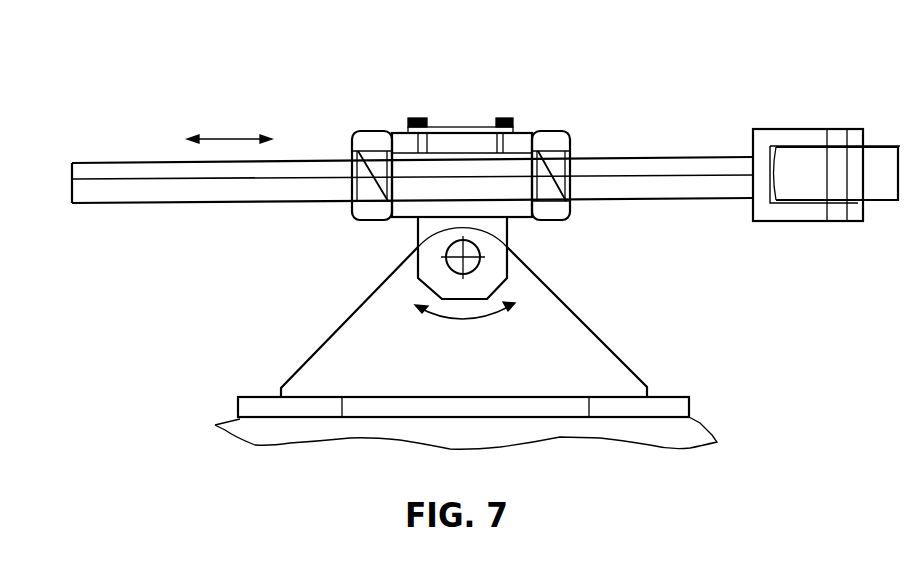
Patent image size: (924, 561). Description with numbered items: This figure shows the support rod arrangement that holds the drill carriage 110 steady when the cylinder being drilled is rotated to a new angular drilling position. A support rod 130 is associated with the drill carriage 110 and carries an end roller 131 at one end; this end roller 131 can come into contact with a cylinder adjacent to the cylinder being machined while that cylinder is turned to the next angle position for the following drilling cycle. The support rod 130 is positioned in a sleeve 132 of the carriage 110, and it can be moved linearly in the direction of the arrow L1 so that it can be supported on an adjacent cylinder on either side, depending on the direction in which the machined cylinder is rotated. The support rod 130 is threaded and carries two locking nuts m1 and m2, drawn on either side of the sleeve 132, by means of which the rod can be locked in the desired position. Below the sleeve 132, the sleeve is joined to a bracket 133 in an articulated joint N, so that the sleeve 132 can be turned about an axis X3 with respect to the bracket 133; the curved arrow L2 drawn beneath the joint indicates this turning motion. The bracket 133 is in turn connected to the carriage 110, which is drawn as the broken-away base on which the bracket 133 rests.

The drill carriage 110 is at (700, 409).
The support rod 130 is at (657, 158).
The end roller 131 is at (833, 160).
The sleeve 132 is at (460, 133).
The bracket 133 is at (490, 383).
The locking nut m1 is at (550, 138).
The locking nut m2 is at (375, 137).
The axis X3 is at (455, 270).
The articulated joint N is at (470, 255).
The arrow (linear positioning direction) L1 is at (238, 138).
The arrow (turning direction) L2 is at (487, 320).